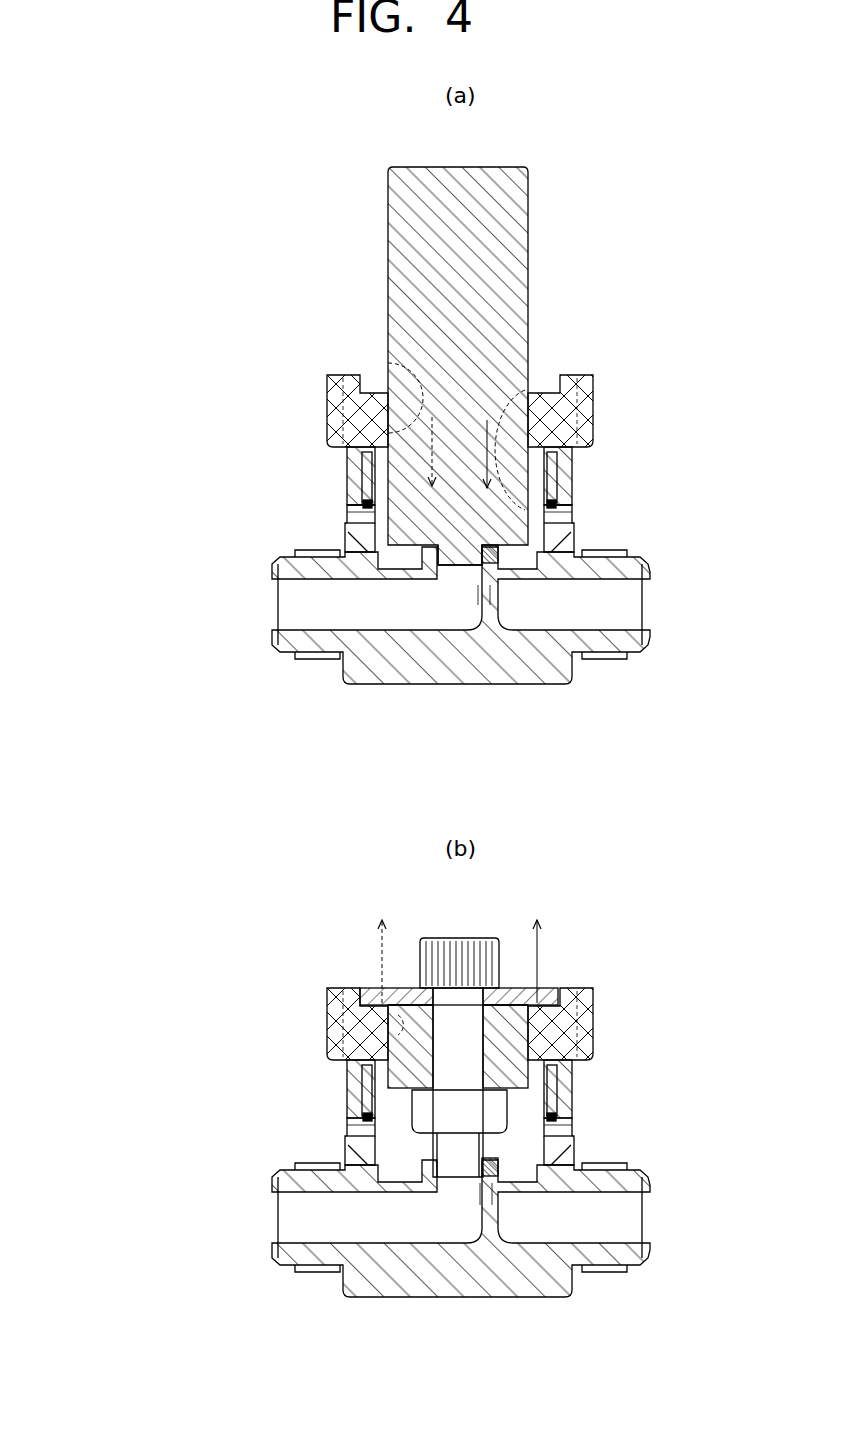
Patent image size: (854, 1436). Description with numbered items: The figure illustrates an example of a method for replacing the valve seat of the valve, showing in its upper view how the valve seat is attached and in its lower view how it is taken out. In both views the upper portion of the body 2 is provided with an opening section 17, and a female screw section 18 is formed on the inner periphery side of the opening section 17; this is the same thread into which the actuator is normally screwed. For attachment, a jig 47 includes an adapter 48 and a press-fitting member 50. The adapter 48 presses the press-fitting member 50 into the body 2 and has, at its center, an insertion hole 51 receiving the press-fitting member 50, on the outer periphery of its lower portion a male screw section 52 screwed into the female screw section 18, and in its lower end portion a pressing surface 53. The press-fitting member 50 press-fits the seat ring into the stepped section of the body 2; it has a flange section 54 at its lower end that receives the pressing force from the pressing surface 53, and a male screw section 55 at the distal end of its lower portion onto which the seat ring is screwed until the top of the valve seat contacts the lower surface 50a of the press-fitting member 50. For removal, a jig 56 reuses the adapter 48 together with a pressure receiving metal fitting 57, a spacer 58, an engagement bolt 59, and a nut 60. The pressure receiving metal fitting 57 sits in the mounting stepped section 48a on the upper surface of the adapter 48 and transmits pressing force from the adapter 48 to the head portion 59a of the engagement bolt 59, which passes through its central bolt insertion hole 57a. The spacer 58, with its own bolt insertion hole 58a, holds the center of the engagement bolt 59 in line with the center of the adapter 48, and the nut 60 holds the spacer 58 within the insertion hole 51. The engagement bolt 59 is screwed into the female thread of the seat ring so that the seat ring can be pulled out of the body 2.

The body 2 is at (440, 650).
The opening section 17 is at (545, 455).
The female screw section 18 is at (520, 443).
The jig 47 is at (298, 368).
The adapter 48 is at (593, 427).
The mounting stepped section 48a is at (380, 987).
The press-fitting member 50 is at (415, 300).
The lower surface 50a is at (573, 547).
The insertion hole 51 is at (395, 395).
The male screw section 52 is at (350, 490).
The pressing surface 53 is at (350, 510).
The flange section 54 is at (348, 530).
The male screw section 55 is at (385, 552).
The jig for seat ring removal 56 is at (165, 1040).
The pressure receiving metal fitting 57 is at (558, 990).
The bolt insertion hole 57a is at (487, 937).
The spacer 58 is at (353, 1057).
The bolt insertion hole 58a is at (353, 1082).
The engagement bolt 59 is at (425, 987).
The head portion 59a is at (440, 937).
The nut 60 is at (470, 1112).